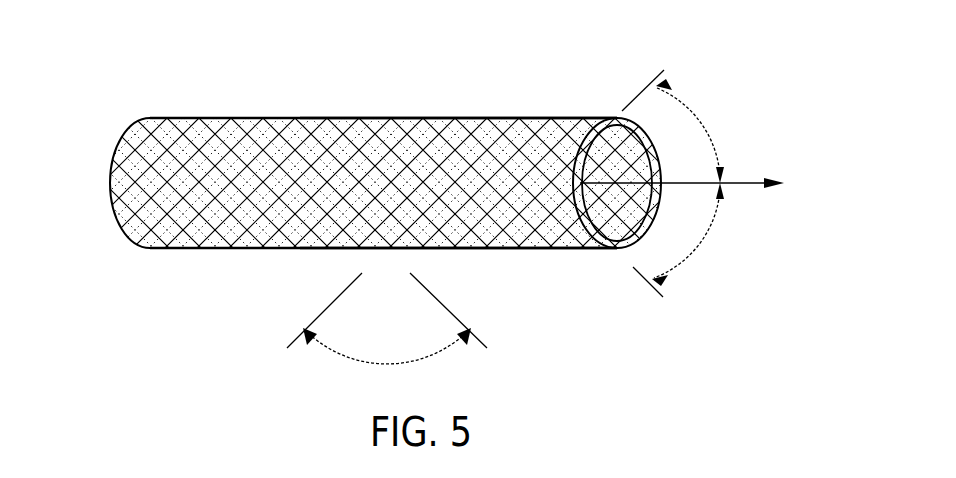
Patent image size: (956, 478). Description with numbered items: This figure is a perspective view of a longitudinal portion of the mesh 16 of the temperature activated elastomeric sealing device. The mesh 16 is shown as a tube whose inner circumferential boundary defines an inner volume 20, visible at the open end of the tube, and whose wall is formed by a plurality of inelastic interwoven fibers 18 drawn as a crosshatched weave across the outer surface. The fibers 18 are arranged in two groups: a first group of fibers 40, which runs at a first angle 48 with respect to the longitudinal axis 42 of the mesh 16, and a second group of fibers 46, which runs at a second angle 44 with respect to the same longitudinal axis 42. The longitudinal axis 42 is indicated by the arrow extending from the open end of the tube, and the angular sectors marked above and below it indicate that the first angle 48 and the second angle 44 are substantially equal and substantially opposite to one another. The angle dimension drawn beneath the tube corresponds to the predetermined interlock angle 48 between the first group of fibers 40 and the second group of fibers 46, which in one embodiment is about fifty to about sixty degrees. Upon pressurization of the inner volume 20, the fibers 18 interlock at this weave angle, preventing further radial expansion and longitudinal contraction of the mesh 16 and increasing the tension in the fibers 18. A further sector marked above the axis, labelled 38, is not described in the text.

The mesh 16 is at (188, 116).
The interwoven fibers 18 is at (268, 146).
The inner volume 20 is at (642, 166).
The first angular sector 38 is at (706, 124).
The first group of fibers 40 is at (462, 118).
The longitudinal axis 42 is at (750, 182).
The second angle 44 is at (698, 255).
The second group of fibers 46 is at (548, 249).
The first angle 48 is at (385, 364).